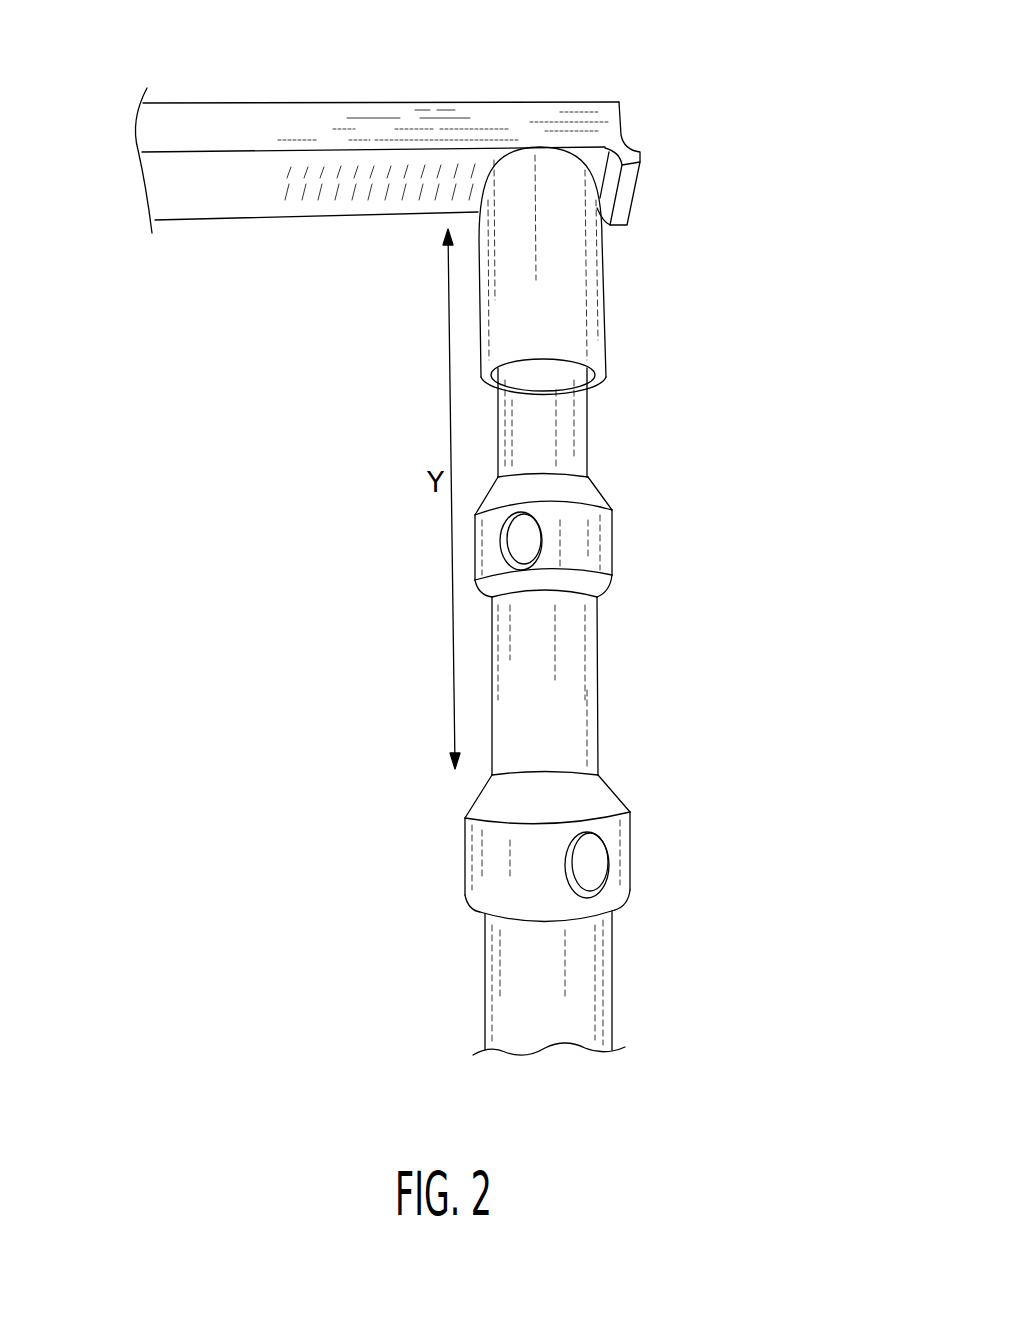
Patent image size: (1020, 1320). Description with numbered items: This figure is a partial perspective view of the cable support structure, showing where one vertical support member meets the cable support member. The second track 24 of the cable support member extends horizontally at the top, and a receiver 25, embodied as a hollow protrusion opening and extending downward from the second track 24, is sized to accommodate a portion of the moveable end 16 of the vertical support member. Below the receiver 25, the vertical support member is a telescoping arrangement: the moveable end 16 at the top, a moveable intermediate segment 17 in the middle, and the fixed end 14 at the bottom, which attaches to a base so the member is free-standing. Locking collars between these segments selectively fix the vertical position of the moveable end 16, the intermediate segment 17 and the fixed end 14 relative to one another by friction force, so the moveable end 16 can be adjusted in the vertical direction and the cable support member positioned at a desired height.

The second track 24 is at (286, 128).
The receiver 25 is at (590, 282).
The moveable end 16 is at (575, 432).
The intermediate segment 17 is at (583, 688).
The fixed end 14 is at (602, 990).